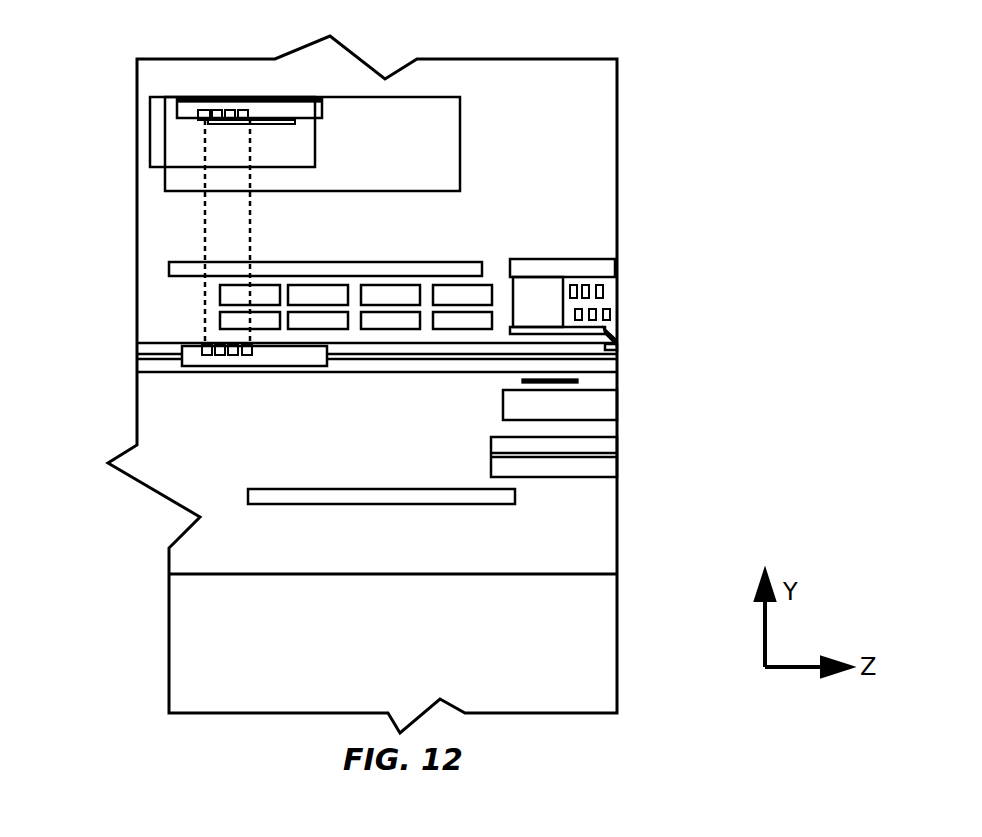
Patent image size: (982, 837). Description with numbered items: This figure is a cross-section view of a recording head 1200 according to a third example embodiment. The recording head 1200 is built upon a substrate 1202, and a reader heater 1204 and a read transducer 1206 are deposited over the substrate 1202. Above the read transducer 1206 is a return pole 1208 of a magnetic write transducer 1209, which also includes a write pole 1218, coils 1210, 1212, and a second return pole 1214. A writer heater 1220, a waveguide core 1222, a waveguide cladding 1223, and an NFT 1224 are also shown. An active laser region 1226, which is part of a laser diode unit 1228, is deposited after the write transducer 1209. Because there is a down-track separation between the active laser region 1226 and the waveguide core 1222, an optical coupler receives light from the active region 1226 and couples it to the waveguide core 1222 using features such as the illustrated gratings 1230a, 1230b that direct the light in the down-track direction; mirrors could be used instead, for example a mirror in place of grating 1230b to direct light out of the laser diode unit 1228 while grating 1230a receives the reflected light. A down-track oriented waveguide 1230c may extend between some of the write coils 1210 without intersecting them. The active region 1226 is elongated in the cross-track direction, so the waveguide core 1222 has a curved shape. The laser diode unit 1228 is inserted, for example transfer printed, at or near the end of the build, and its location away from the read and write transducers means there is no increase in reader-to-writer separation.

The recording head 1200 is at (550, 70).
The substrate 1202 is at (257, 707).
The reader heater 1204 is at (408, 504).
The read transducer 1206 is at (597, 477).
The return pole 1208 is at (617, 410).
The magnetic write transducer 1209 is at (767, 294).
The coils 1210 is at (407, 285).
The coils 1212 is at (612, 315).
The second return pole 1214 is at (612, 267).
The write pole 1218 is at (615, 340).
The writer heater 1220 is at (578, 381).
The waveguide core 1222 is at (353, 365).
The waveguide cladding 1223 is at (458, 346).
The NFT 1224 is at (617, 350).
The active laser region 1226 is at (317, 122).
The laser diode unit 1228 is at (296, 185).
The grating 1230a is at (238, 366).
The grating 1230b is at (233, 103).
The down-track waveguide 1230c is at (210, 229).